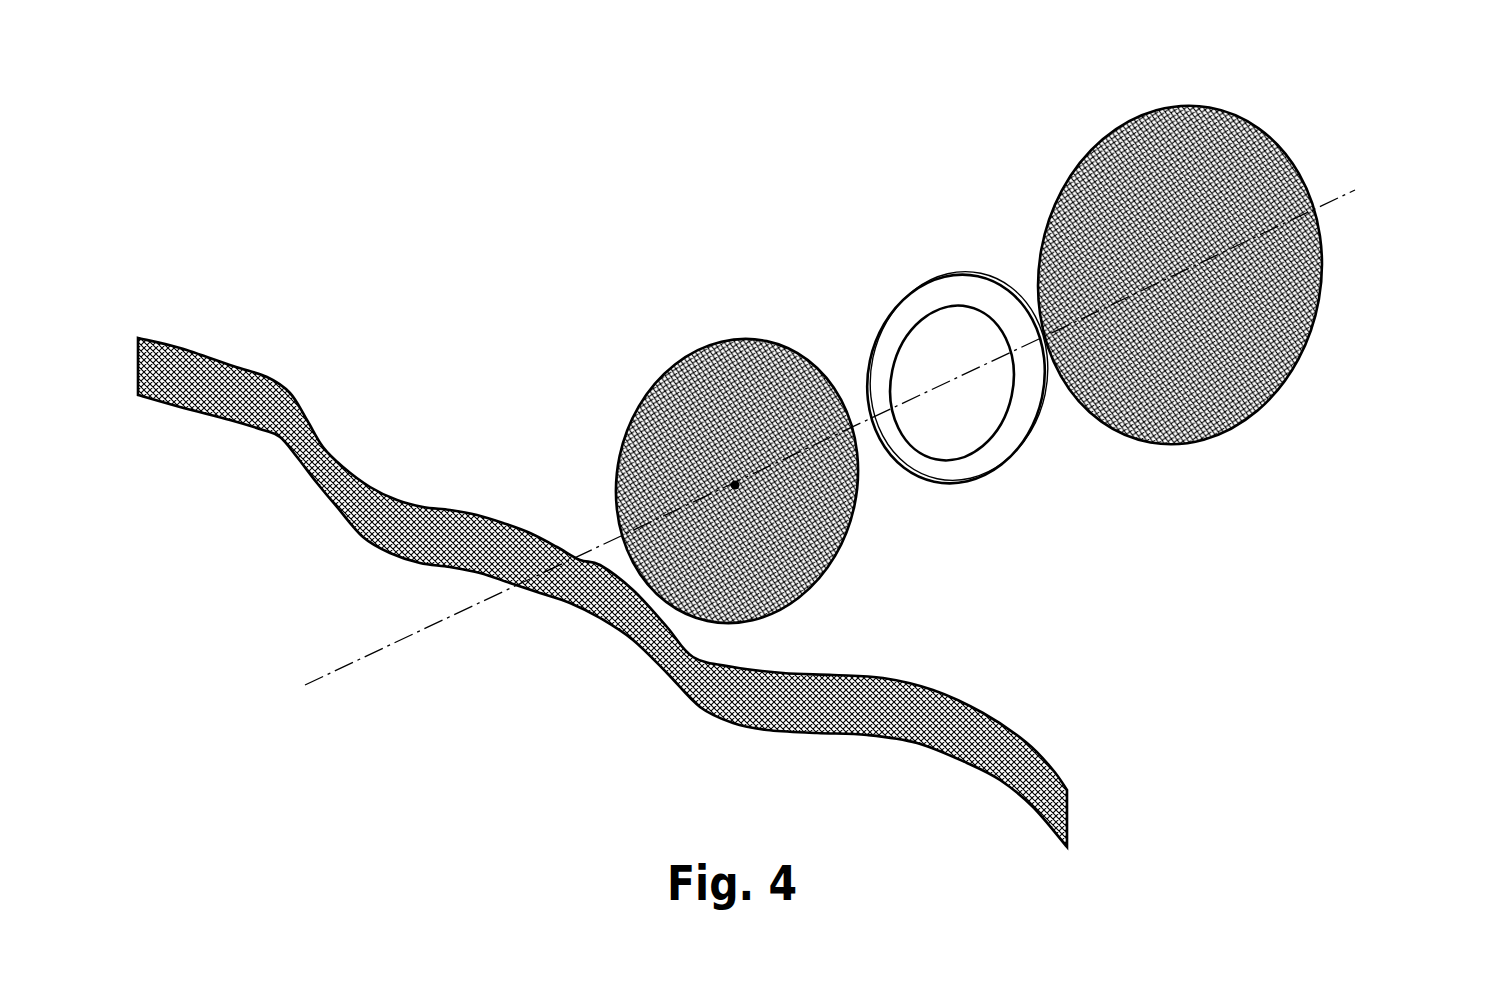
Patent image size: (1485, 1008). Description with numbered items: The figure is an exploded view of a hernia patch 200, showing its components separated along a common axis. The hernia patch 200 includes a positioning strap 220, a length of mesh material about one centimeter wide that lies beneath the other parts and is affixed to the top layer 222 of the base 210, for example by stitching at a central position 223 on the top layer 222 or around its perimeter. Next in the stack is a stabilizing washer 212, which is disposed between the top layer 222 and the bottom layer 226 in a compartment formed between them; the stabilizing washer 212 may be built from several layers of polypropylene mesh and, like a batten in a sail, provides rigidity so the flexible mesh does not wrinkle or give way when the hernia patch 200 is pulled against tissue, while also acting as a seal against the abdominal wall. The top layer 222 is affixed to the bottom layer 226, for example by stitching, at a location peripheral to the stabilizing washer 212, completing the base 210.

The hernia patch 200 is at (1334, 788).
The base 210 is at (1003, 331).
The stabilizing washer 212 is at (1015, 440).
The positioning strap 220 is at (282, 383).
The top layer 222 is at (853, 555).
The central position 223 is at (735, 485).
The bottom layer 226 is at (1282, 412).